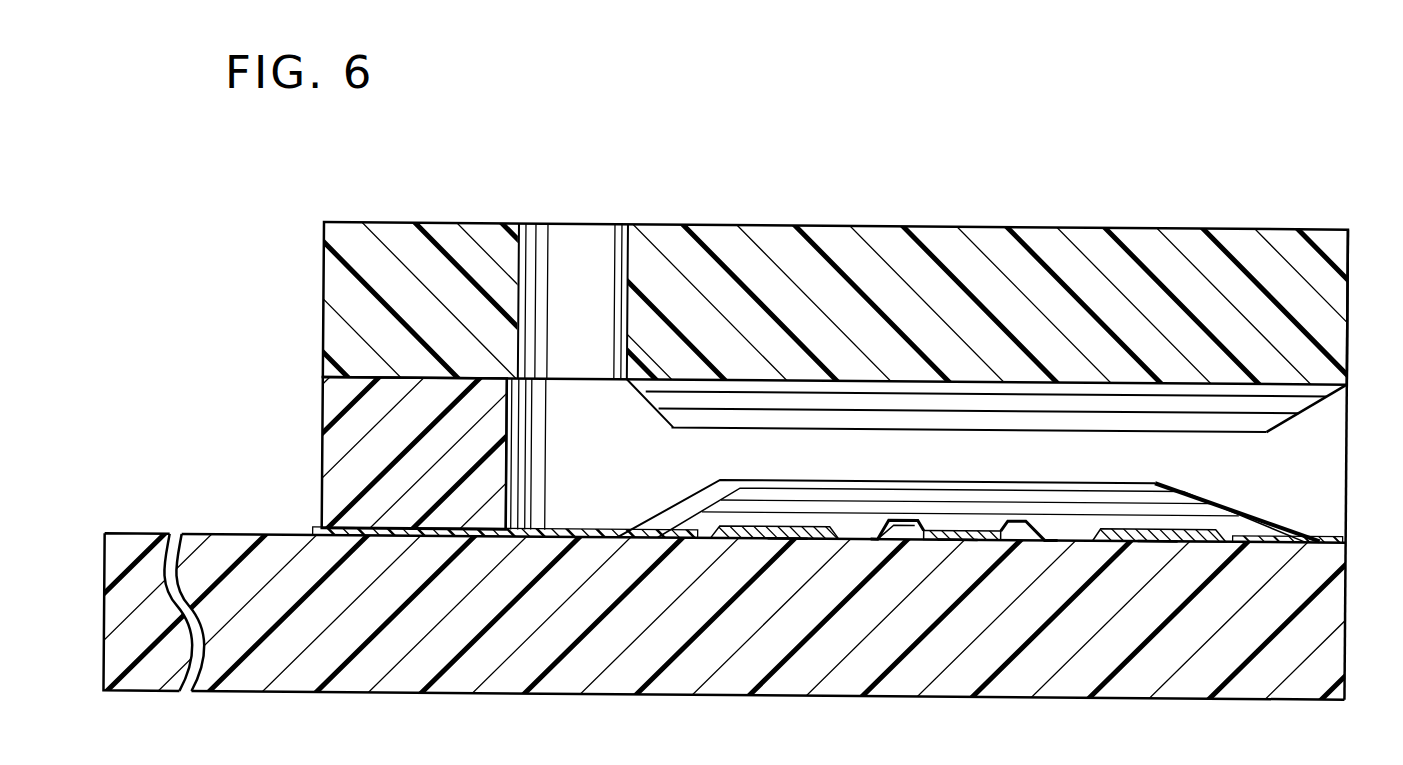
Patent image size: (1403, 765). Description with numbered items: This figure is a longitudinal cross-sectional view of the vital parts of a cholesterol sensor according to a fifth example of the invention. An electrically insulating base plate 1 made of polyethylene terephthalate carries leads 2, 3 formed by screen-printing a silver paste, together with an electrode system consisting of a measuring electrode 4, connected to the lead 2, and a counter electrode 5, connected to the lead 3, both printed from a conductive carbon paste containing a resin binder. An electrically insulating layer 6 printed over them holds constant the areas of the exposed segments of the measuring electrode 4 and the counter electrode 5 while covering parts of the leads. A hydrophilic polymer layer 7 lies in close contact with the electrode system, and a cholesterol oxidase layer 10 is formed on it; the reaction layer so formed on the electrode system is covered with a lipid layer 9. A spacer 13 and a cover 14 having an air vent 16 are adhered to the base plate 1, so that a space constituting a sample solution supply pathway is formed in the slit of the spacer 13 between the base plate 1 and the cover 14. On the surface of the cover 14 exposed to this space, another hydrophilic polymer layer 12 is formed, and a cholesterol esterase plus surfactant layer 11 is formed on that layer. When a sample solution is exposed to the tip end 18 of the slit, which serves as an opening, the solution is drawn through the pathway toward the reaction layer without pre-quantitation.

The electrically insulating base plate 1 is at (375, 694).
The lead 2 is at (960, 542).
The lead 3 is at (790, 542).
The measuring electrode 4 is at (962, 526).
The counter electrode 5 is at (775, 524).
The electrically insulating layer 6 is at (565, 527).
The hydrophilic polymer layer 7 is at (1270, 516).
The lipid layer 9 is at (685, 500).
The cholesterol oxidase layer 10 is at (1205, 488).
The cholesterol esterase plus surfactant layer 11 is at (1082, 412).
The hydrophilic polymer layer 12 is at (1313, 390).
The spacer 13 is at (325, 458).
The cover 14 is at (832, 241).
The air vent 16 is at (574, 222).
The tip end 18 is at (1352, 436).